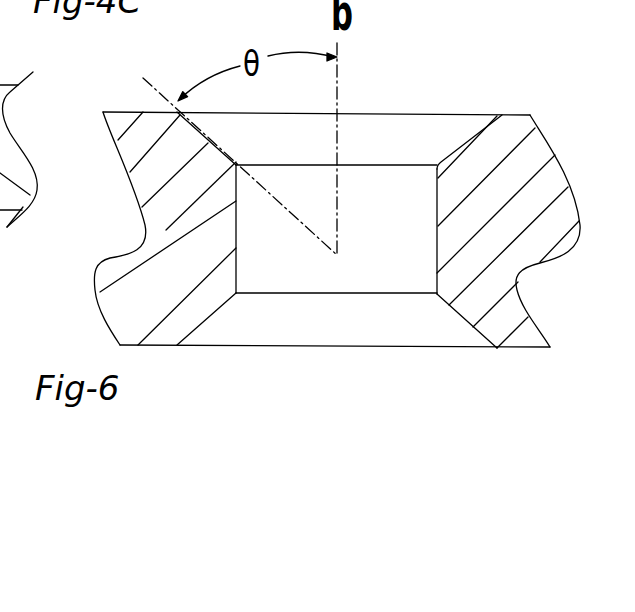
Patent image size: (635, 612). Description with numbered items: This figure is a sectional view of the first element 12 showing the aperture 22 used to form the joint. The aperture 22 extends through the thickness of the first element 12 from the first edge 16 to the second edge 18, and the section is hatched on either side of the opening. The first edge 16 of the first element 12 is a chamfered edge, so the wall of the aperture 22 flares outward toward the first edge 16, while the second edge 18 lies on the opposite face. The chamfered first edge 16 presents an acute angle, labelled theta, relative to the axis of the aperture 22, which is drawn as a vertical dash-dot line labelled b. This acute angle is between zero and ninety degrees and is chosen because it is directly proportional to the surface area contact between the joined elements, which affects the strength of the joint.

The first element 12 is at (510, 124).
The first edge 16 is at (415, 132).
The second edge 18 is at (270, 318).
The aperture 22 is at (382, 231).